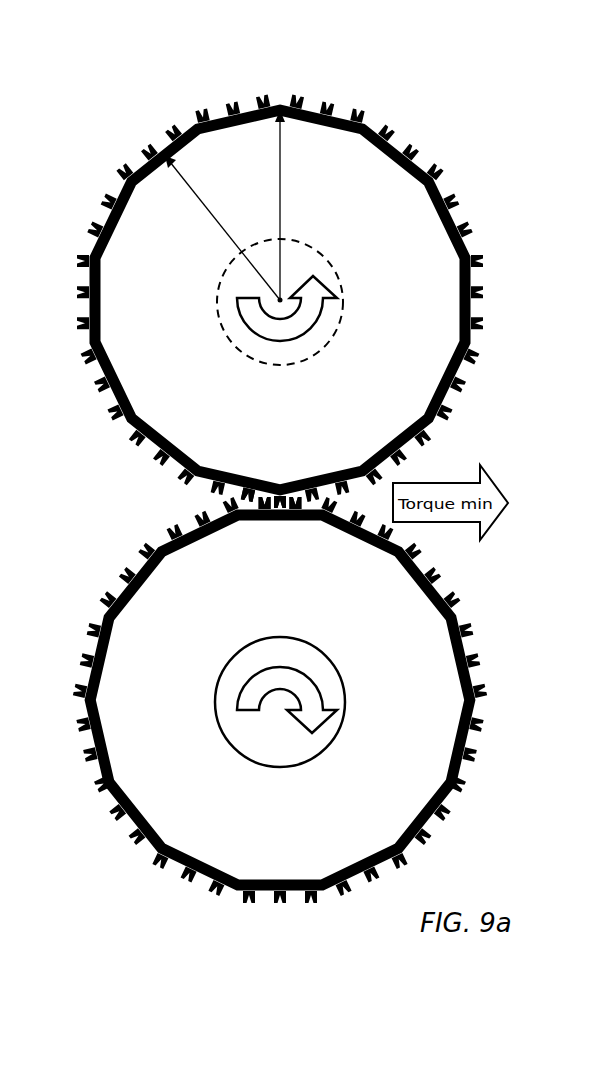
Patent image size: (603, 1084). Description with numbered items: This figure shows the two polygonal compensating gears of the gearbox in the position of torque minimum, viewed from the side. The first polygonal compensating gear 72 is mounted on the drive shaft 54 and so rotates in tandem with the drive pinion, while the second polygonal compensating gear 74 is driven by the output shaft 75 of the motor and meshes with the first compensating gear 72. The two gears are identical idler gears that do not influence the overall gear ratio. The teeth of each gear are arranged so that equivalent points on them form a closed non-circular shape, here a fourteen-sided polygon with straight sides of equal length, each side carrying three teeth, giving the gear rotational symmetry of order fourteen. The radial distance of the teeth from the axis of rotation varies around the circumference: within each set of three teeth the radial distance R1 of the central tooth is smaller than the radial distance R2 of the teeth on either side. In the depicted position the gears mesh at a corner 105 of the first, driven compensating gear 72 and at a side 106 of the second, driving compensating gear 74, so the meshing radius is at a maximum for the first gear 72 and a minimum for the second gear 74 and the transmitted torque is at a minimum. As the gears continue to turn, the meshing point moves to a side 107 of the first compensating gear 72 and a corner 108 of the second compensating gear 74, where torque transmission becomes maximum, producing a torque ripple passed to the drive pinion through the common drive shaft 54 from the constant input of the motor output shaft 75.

The first polygonal compensating gear 72 is at (407, 252).
The second polygonal compensating gear 74 is at (415, 642).
The drive shaft 54 is at (232, 320).
The output shaft of the motor 75 is at (253, 733).
The corner of the first compensating gear 105 is at (282, 492).
The side of the second compensating gear 106 is at (297, 520).
The side of the first compensating gear 107 is at (232, 488).
The corner of the second compensating gear 108 is at (238, 513).
The radial distance of the central tooth R1 is at (222, 228).
The radial distance of the teeth on either side R2 is at (276, 205).